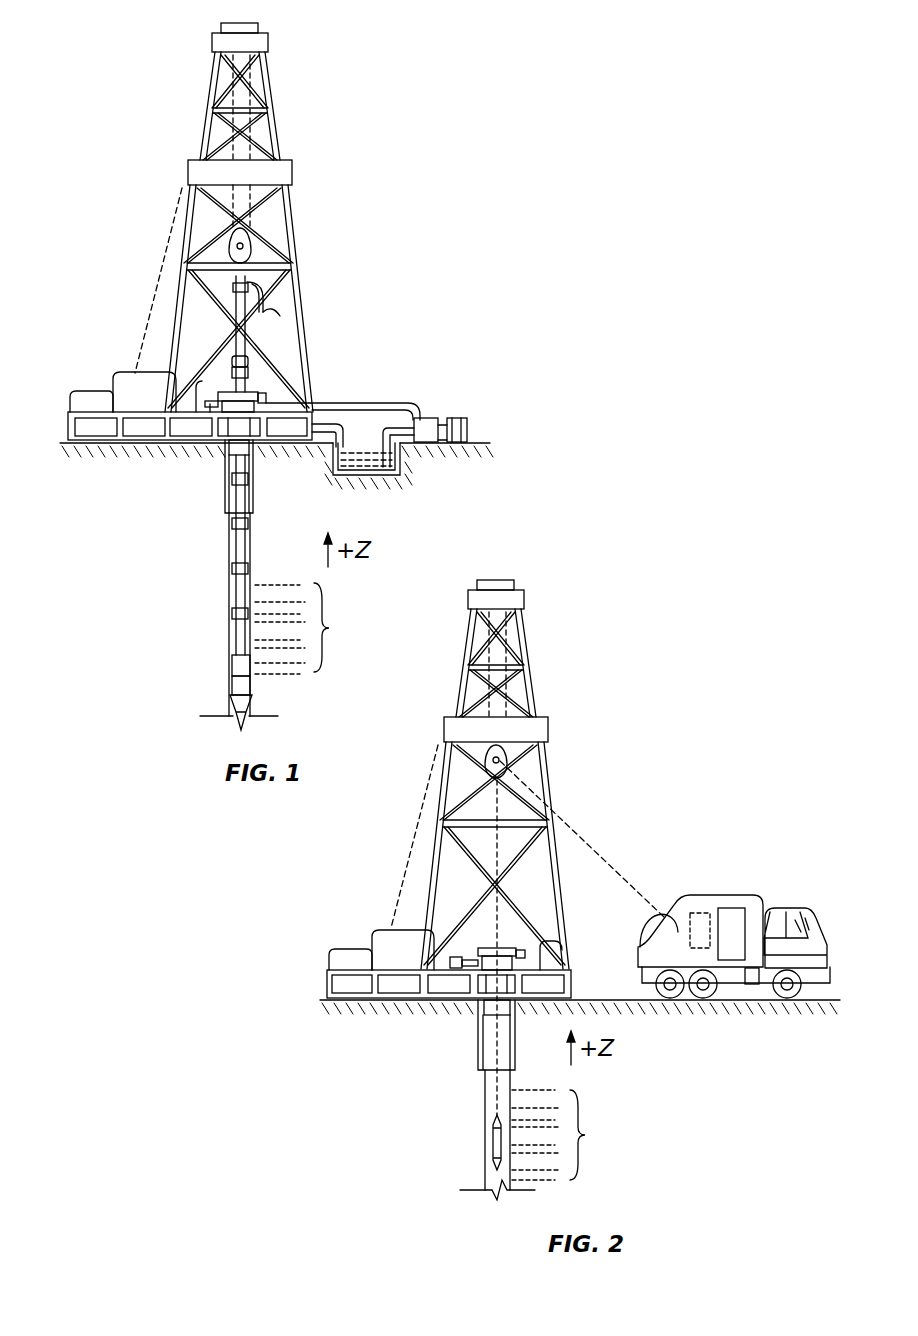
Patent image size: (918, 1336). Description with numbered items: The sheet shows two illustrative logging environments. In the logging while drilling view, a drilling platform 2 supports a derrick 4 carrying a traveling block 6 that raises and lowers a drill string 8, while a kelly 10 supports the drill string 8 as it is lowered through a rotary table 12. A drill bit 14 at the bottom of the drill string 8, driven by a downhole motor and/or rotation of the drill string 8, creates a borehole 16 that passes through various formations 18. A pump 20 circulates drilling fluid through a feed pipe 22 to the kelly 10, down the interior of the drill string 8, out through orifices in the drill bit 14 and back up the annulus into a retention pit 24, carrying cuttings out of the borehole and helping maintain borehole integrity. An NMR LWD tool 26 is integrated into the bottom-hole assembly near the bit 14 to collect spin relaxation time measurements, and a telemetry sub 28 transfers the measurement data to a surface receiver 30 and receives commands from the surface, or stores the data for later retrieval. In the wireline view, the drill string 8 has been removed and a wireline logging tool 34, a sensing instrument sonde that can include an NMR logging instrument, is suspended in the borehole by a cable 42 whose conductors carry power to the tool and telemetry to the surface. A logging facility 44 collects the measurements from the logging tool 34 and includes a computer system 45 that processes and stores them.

In FIG. 1, the drilling platform 2 is at (68, 428).
In FIG. 2, the drilling platform 2 is at (572, 986).
In FIG. 1, the derrick 4 is at (283, 140).
In FIG. 2, the derrick 4 is at (566, 913).
In FIG. 1, the traveling block 6 is at (246, 242).
In FIG. 2, the traveling block 6 is at (500, 757).
In FIG. 1, the drill string 8 is at (246, 543).
In FIG. 1, the kelly 10 is at (240, 303).
In FIG. 1, the rotary table 12 is at (255, 392).
In FIG. 2, the rotary table 12 is at (505, 950).
In FIG. 1, the drill bit 14 is at (250, 712).
In FIG. 1, the borehole 16 is at (252, 551).
In FIG. 1, the formations 18 is at (306, 628).
In FIG. 2, the formations 18 is at (563, 1135).
In FIG. 1, the pump 20 is at (425, 418).
In FIG. 1, the feed pipe 22 is at (392, 403).
In FIG. 1, the retention pit 24 is at (372, 480).
In FIG. 1, the NMR LWD tool 26 is at (236, 685).
In FIG. 1, the telemetry sub 28 is at (236, 668).
In FIG. 1, the surface receiver 30 is at (248, 361).
In FIG. 2, the wireline logging tool 34 is at (497, 1145).
In FIG. 2, the cable 42 is at (590, 851).
In FIG. 2, the logging facility 44 is at (757, 895).
In FIG. 2, the computer system 45 is at (705, 920).